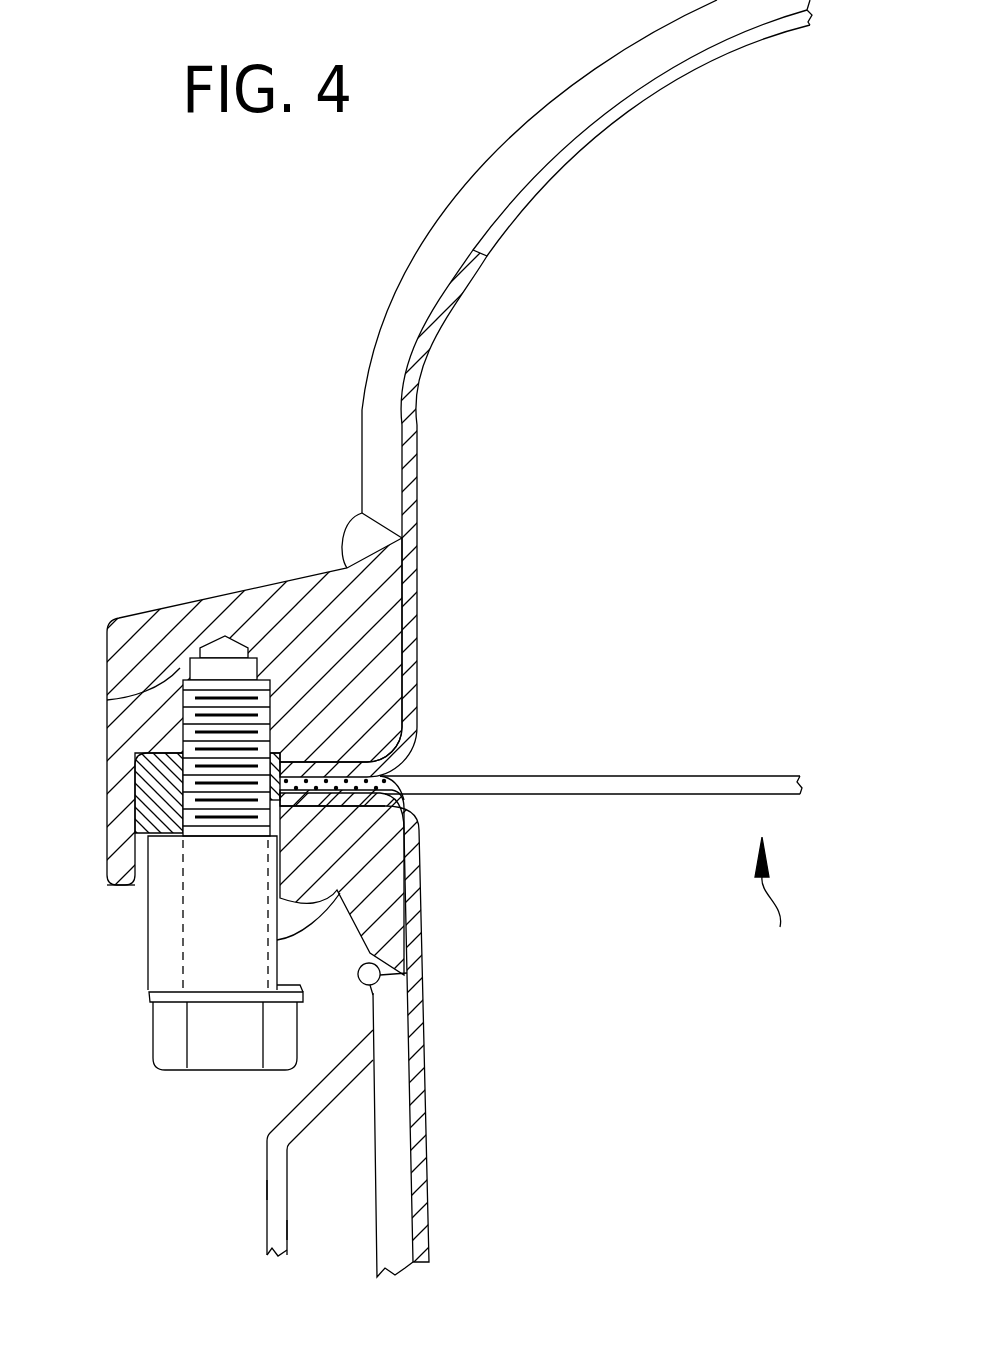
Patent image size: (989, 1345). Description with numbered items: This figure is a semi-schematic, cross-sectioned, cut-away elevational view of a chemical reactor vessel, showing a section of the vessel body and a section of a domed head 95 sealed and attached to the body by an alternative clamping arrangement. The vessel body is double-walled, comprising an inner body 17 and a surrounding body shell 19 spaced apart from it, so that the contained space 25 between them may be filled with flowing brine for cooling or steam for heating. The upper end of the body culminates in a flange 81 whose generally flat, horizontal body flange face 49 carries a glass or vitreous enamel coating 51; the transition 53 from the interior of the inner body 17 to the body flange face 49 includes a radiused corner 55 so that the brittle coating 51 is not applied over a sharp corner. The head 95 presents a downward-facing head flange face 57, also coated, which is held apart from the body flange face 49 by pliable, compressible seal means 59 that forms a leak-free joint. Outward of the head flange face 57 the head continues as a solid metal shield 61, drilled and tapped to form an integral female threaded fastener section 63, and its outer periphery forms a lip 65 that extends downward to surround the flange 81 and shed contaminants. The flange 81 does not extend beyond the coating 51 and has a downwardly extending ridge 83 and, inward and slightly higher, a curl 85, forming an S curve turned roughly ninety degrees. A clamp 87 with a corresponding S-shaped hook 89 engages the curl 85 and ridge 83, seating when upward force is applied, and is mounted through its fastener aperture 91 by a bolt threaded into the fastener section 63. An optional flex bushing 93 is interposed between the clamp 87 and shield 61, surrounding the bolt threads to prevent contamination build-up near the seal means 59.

The inner body 17 is at (373, 1115).
The body shell 19 is at (262, 1180).
The contained space 25 is at (308, 1212).
The body flange face 49 is at (346, 818).
The glass or vitreous enamel coating 51 is at (452, 292).
The transition 53 is at (780, 902).
The radiused corner 55 is at (430, 818).
The head flange face 57 is at (400, 792).
The seal means 59 is at (330, 762).
The shield 61 is at (107, 728).
The fastener section 63 is at (107, 700).
The lip 65 is at (107, 857).
The flange 81 is at (425, 908).
The ridge 83 is at (323, 908).
The curl 85 is at (277, 940).
The clamp 87 is at (150, 988).
The hook 89 is at (352, 950).
The fastener aperture 91 is at (178, 942).
The flex bushing 93 is at (135, 792).
The head 95 is at (320, 325).